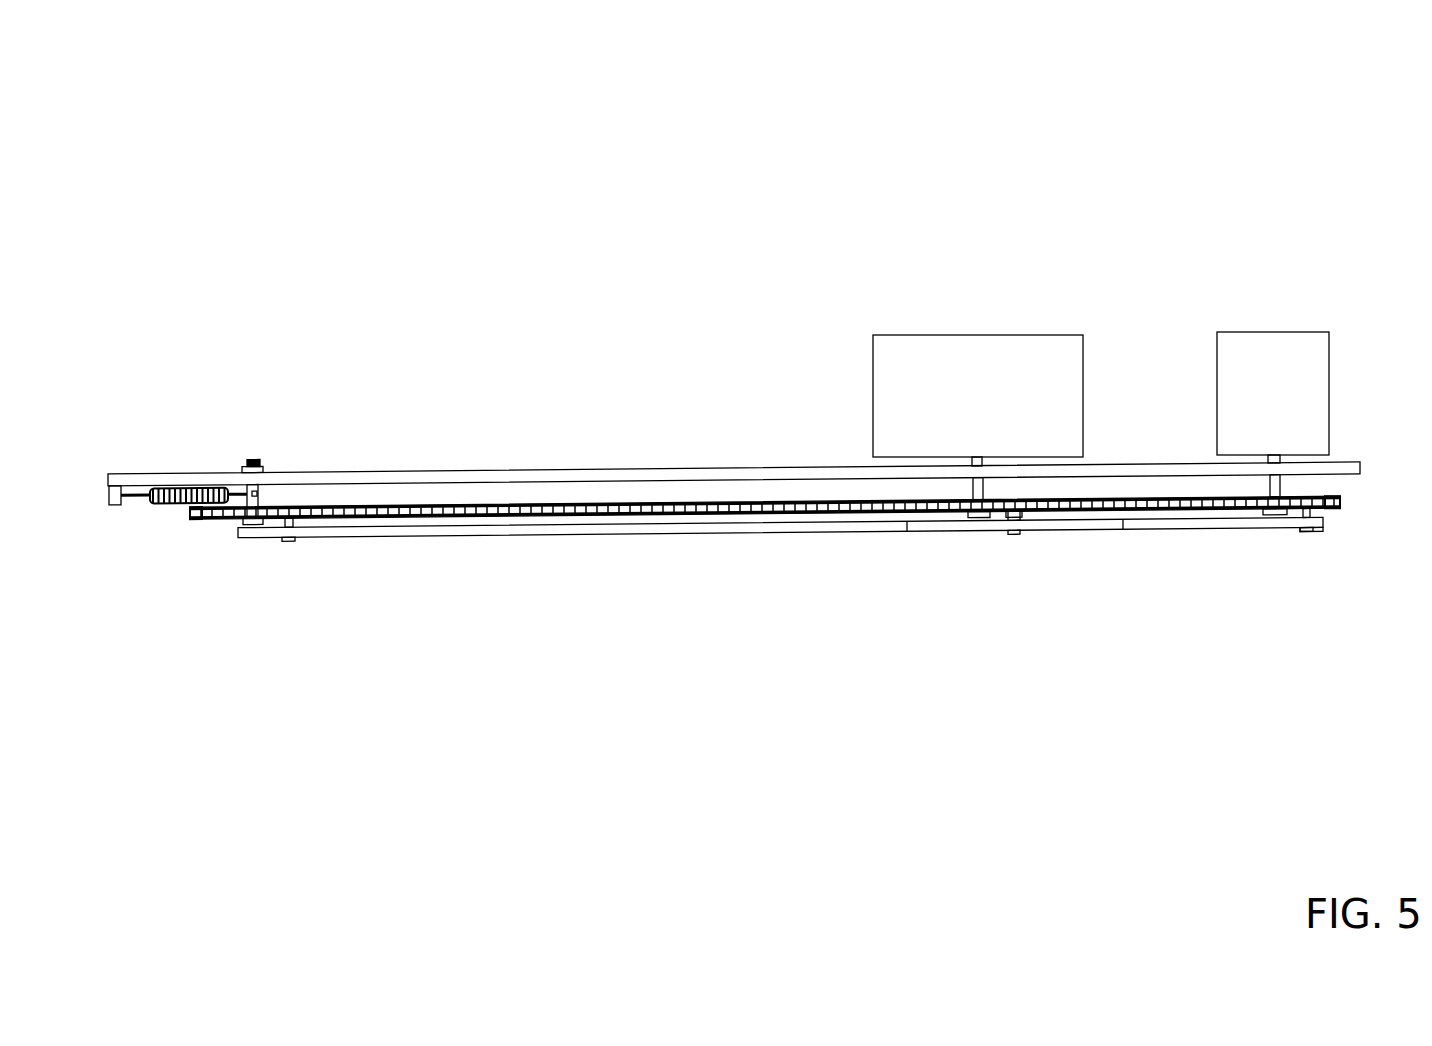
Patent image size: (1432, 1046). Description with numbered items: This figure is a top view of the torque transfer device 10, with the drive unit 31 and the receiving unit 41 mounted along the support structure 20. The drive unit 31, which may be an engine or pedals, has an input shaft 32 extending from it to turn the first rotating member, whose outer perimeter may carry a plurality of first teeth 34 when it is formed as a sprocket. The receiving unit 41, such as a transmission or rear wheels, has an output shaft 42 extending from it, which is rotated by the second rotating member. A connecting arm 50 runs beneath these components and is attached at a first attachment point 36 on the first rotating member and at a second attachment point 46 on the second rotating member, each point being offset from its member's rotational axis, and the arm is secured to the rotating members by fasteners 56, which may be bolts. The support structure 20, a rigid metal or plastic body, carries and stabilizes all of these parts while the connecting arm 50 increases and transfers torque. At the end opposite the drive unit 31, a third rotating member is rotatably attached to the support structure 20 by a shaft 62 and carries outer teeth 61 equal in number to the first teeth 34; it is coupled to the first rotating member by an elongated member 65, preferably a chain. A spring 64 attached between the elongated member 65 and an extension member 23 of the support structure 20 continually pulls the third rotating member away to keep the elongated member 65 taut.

The torque transfer device 10 is at (283, 166).
The support structure 20 is at (594, 455).
The extension member 23 is at (115, 507).
The drive unit 31 is at (1253, 436).
The input shaft 32 is at (1268, 492).
The first teeth 34 is at (1310, 496).
The first attachment point 36 is at (1318, 533).
The receiving unit 41 is at (952, 438).
The output shaft 42 is at (975, 484).
The second attachment point 46 is at (1012, 518).
The connecting arm 50 is at (615, 538).
The fastener 56 is at (295, 542).
The outer teeth 61 is at (225, 514).
The shaft 62 is at (262, 486).
The spring 64 is at (163, 483).
The elongated member 65 is at (435, 517).